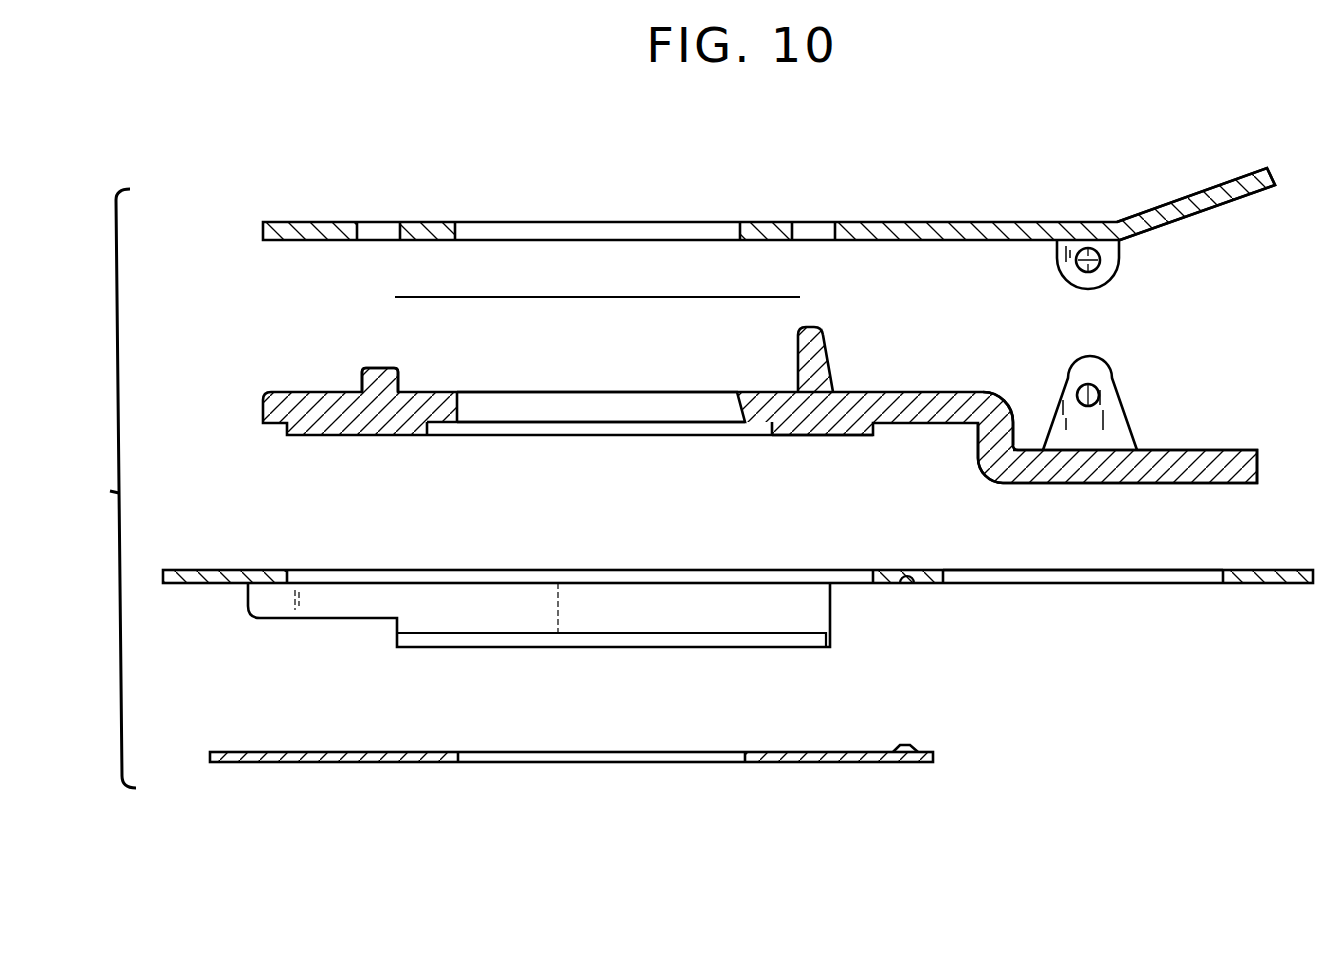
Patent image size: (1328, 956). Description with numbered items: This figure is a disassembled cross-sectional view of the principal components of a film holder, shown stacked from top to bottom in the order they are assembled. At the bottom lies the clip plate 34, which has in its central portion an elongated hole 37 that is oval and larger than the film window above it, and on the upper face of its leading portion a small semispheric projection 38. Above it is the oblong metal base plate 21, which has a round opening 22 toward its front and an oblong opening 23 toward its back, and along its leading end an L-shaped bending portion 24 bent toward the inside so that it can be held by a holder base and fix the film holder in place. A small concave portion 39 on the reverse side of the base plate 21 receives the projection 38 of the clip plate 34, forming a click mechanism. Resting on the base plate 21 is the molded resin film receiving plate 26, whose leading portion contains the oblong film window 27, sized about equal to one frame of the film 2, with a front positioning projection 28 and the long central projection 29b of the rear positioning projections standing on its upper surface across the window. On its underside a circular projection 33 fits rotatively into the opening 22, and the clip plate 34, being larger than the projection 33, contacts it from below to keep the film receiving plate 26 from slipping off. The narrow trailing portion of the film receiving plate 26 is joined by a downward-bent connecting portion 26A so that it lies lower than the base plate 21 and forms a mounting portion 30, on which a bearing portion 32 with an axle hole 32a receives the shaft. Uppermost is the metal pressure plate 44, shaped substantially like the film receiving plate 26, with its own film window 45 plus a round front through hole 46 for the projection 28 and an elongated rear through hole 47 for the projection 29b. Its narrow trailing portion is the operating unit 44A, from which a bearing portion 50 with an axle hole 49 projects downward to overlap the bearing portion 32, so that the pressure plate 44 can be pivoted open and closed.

The film 2 is at (583, 297).
The base plate 21 is at (738, 609).
The opening 22 is at (852, 583).
The opening 23 is at (965, 580).
The bending portion 24 is at (808, 638).
The film receiving plate 26 is at (760, 405).
The connecting portion 26A is at (978, 436).
The film window 27 is at (445, 420).
The front positioning projection 28 is at (383, 380).
The central projection 29b is at (808, 352).
The mounting portion 30 is at (1185, 470).
The bearing portion 32 is at (1108, 378).
The axle hole 32a is at (1085, 388).
The circular projection 33 is at (823, 415).
The clip plate 34 is at (592, 754).
The elongated hole 37 is at (733, 752).
The semispheric projection 38 is at (912, 748).
The concave portion 39 is at (907, 583).
The pressure plate 44 is at (769, 217).
The operating unit 44A is at (1205, 200).
The film window 45 is at (735, 230).
The front through hole 46 is at (377, 233).
The rear through hole 47 is at (812, 230).
The axle hole 49 is at (1083, 253).
The bearing portion 50 is at (1112, 257).